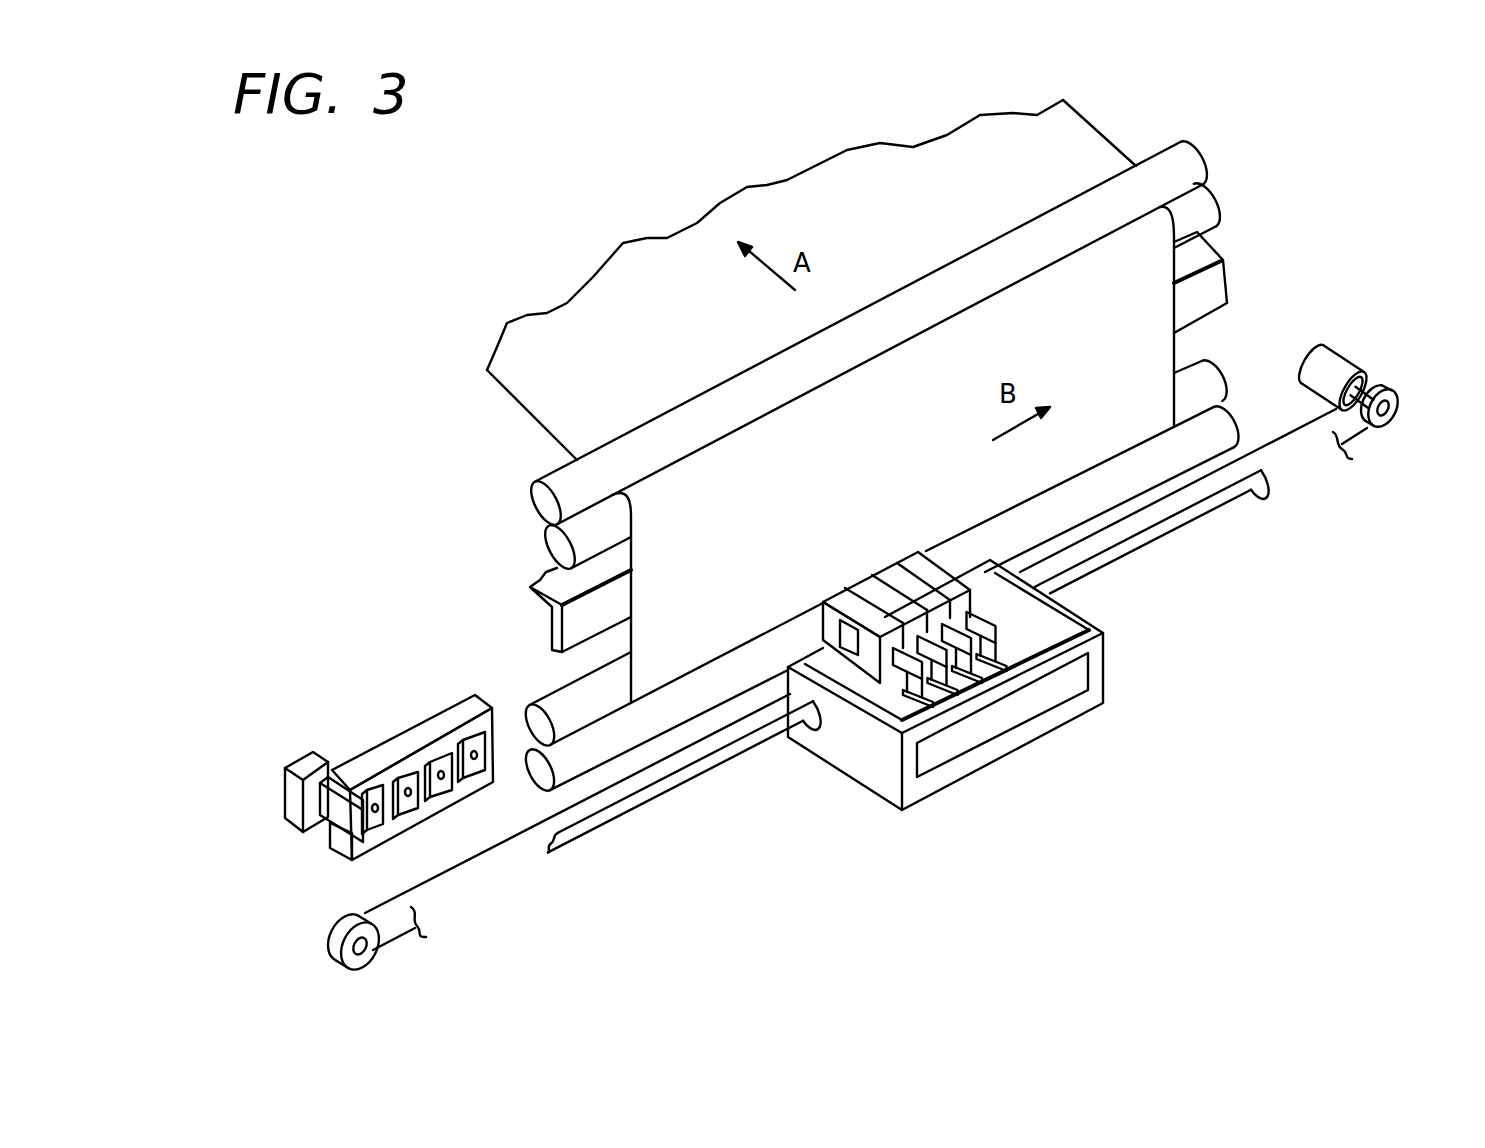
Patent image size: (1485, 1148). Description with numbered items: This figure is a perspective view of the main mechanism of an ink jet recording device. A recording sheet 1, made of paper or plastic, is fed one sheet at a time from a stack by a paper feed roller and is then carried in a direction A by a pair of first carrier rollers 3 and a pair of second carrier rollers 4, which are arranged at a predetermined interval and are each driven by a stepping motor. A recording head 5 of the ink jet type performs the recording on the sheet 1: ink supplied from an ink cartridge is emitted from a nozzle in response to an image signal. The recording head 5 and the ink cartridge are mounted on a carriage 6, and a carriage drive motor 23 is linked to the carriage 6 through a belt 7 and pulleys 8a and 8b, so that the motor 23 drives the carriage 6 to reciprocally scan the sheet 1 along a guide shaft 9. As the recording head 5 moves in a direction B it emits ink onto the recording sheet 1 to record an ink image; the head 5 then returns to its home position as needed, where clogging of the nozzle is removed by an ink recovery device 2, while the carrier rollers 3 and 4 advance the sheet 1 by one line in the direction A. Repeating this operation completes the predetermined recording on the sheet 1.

The recording sheet 1 is at (1092, 158).
The ink recovery device 2 is at (395, 745).
The pair of first carrier rollers 3 is at (1233, 422).
The pair of second carrier rollers 4 is at (1214, 203).
The recording head 5 is at (822, 605).
The carriage 6 is at (1058, 658).
The belt 7 is at (497, 845).
The pulley 8a is at (1385, 430).
The pulley 8b is at (333, 925).
The guide shaft 9 is at (684, 784).
The carriage drive motor 23 is at (1338, 356).